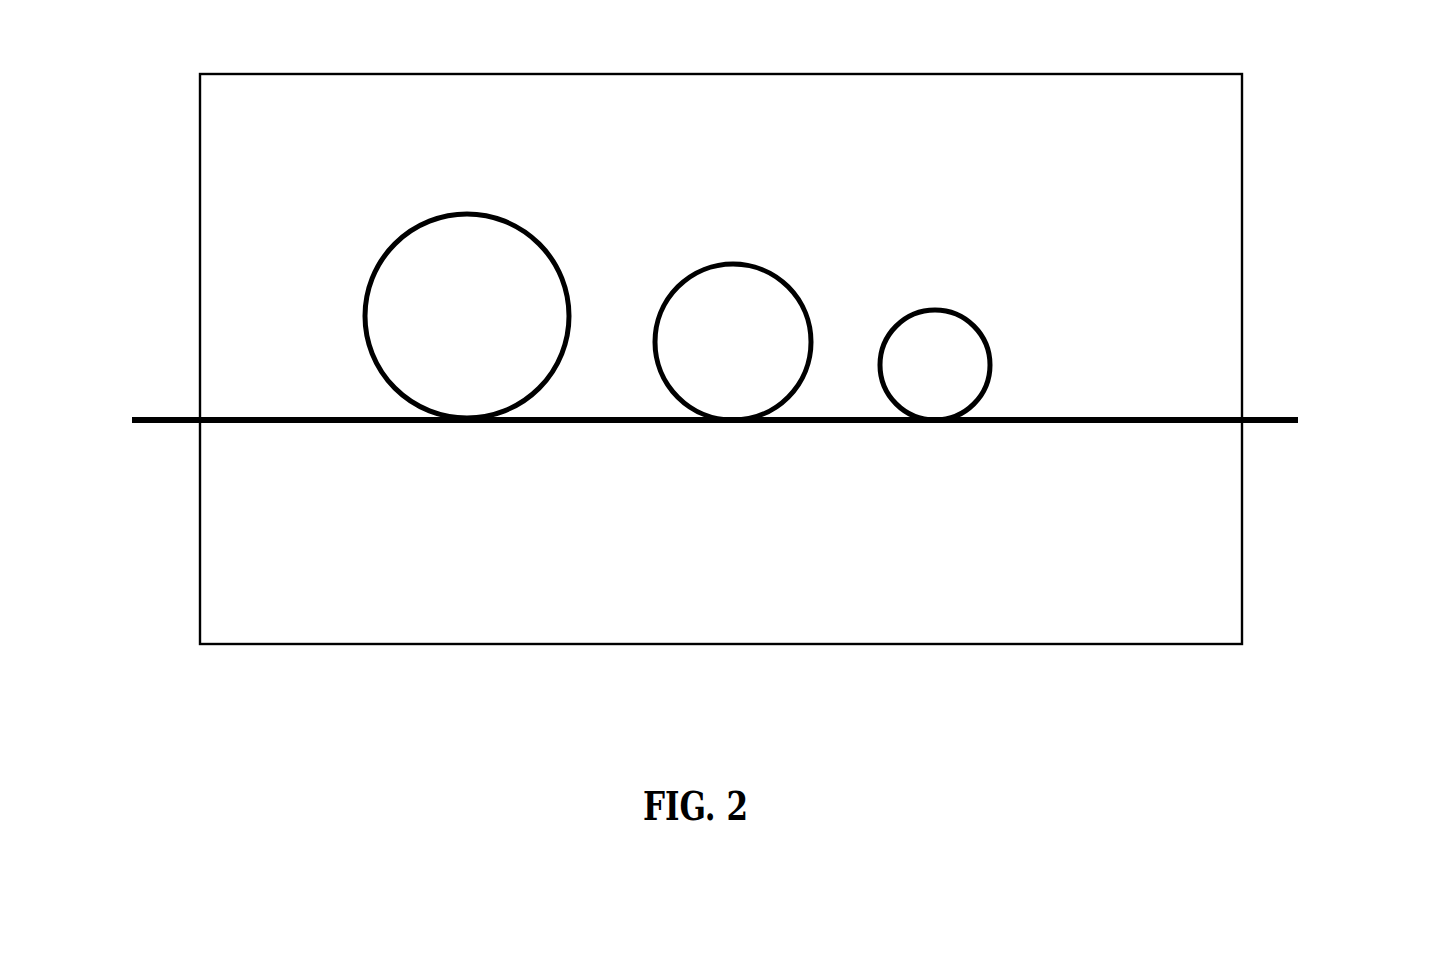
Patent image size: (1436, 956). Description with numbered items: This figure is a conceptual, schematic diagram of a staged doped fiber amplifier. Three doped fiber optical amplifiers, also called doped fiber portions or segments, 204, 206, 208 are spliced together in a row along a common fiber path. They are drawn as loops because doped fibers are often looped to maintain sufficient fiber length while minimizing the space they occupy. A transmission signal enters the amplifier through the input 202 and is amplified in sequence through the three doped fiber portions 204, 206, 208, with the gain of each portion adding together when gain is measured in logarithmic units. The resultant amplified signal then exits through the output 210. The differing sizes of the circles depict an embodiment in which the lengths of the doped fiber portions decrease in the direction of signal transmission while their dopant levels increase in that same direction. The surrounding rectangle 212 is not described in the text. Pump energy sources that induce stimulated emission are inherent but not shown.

The input 202 is at (156, 428).
The doped fiber portion 204 is at (467, 202).
The doped fiber portion 206 is at (732, 262).
The doped fiber portion 208 is at (946, 305).
The output 210 is at (1284, 430).
The substrate / chip 212 is at (326, 652).